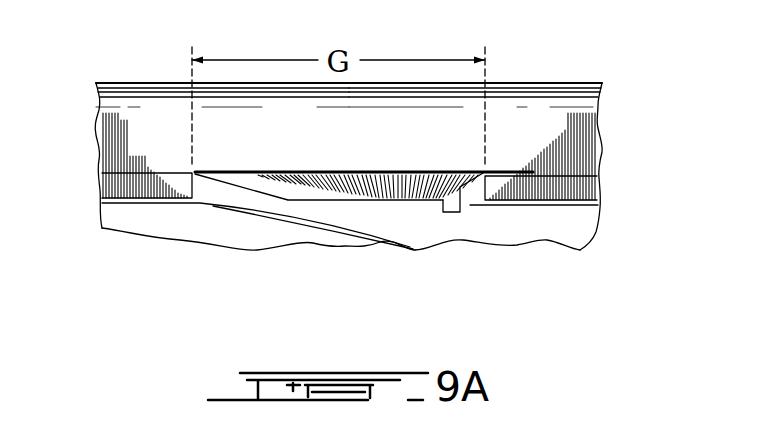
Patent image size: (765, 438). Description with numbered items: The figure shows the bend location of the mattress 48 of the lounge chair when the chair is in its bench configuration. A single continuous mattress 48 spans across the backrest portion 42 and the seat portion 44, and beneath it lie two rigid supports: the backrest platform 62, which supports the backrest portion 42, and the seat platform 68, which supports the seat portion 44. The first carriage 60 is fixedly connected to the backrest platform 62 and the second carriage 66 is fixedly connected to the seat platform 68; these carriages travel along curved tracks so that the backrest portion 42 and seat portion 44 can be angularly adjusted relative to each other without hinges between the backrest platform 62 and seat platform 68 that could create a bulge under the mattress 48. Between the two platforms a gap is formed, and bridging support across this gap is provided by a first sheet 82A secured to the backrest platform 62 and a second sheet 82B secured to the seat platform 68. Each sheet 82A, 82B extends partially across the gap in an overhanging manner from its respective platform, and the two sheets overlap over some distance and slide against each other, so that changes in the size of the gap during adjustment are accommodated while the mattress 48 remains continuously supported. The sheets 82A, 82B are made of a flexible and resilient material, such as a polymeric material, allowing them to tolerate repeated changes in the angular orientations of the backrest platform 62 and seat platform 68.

The backrest portion 42 is at (127, 96).
The seat portion 44 is at (573, 97).
The mattress 48 is at (118, 153).
The first carriage 60 is at (240, 230).
The backrest platform 62 is at (142, 190).
The second carriage 66 is at (517, 230).
The seat platform 68 is at (560, 190).
The first sheet 82A is at (352, 185).
The second sheet 82B is at (458, 185).